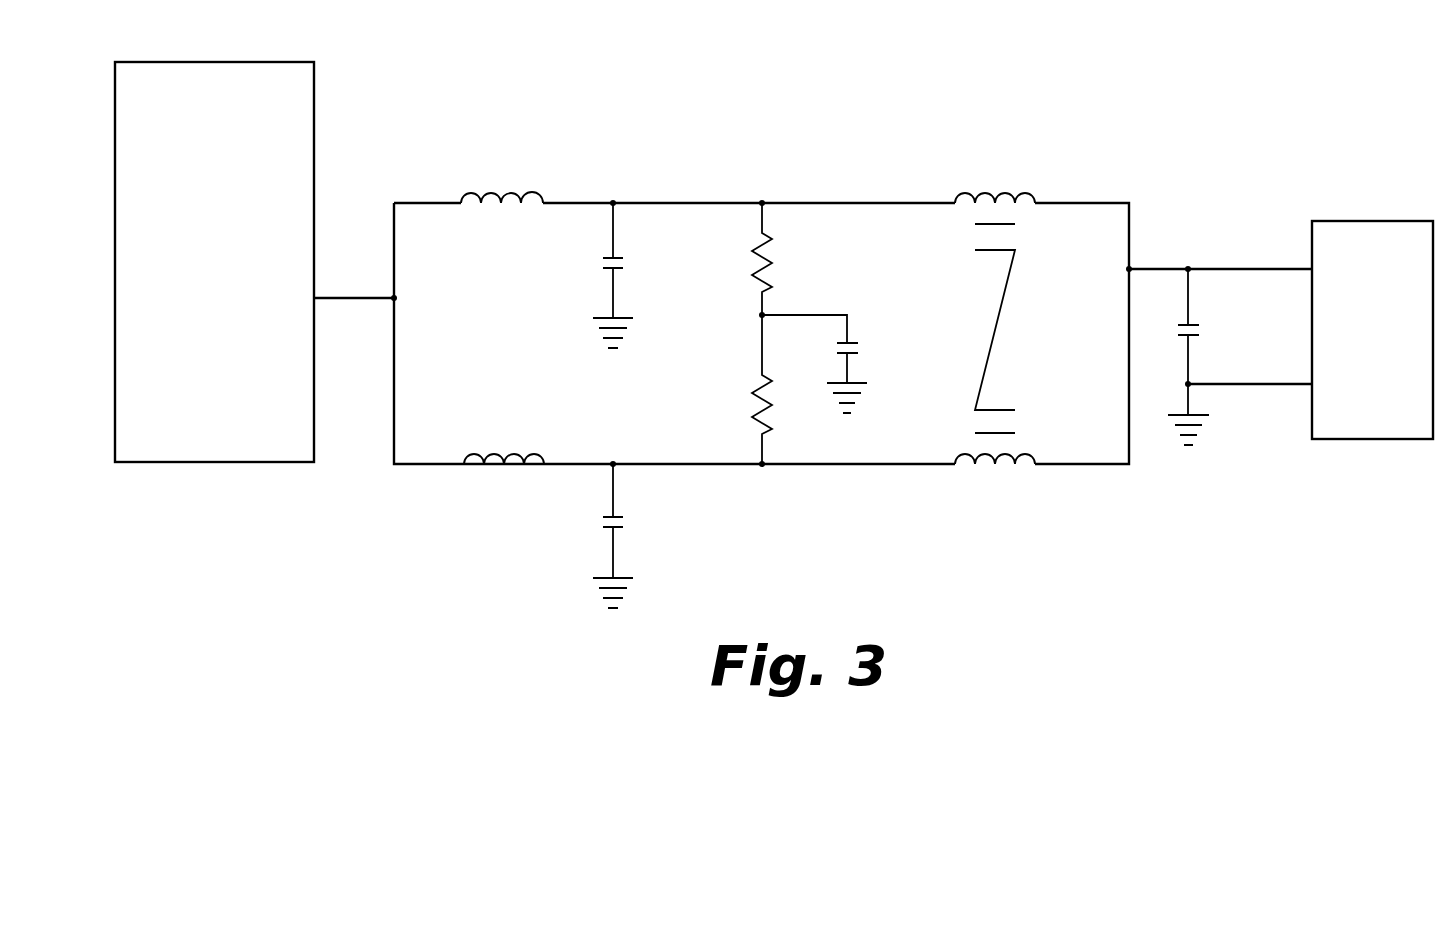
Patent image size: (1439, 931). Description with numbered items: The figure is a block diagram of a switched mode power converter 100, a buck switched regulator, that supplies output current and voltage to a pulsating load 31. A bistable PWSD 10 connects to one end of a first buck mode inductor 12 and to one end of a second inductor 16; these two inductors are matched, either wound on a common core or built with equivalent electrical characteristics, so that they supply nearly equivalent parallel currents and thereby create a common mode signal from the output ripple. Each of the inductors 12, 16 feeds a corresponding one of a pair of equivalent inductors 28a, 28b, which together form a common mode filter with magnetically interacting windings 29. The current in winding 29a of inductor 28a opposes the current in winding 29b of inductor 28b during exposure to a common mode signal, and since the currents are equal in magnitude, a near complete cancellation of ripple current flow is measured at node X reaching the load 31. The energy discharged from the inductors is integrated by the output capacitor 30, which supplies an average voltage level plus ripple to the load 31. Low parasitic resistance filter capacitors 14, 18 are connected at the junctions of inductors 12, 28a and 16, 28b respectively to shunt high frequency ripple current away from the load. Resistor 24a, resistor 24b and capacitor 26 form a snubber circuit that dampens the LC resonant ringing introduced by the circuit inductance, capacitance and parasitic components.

The PWSD 10 is at (314, 141).
The inductor 12 is at (493, 193).
The filter capacitor 14 is at (601, 259).
The second inductor 16 is at (504, 465).
The filter capacitor 18 is at (620, 518).
The resistor 24a is at (757, 250).
The resistor 24b is at (757, 392).
The capacitor 26 is at (857, 343).
The equivalent inductor 28a is at (987, 193).
The equivalent inductor 28b is at (993, 465).
The magnetically interacting windings 29 is at (995, 330).
The winding 29a is at (975, 224).
The winding 29b is at (1015, 433).
The output capacitor 30 is at (1200, 325).
The pulsating load 31 is at (1338, 220).
The switched mode power converter 100 is at (1173, 161).
The node X is at (1129, 269).